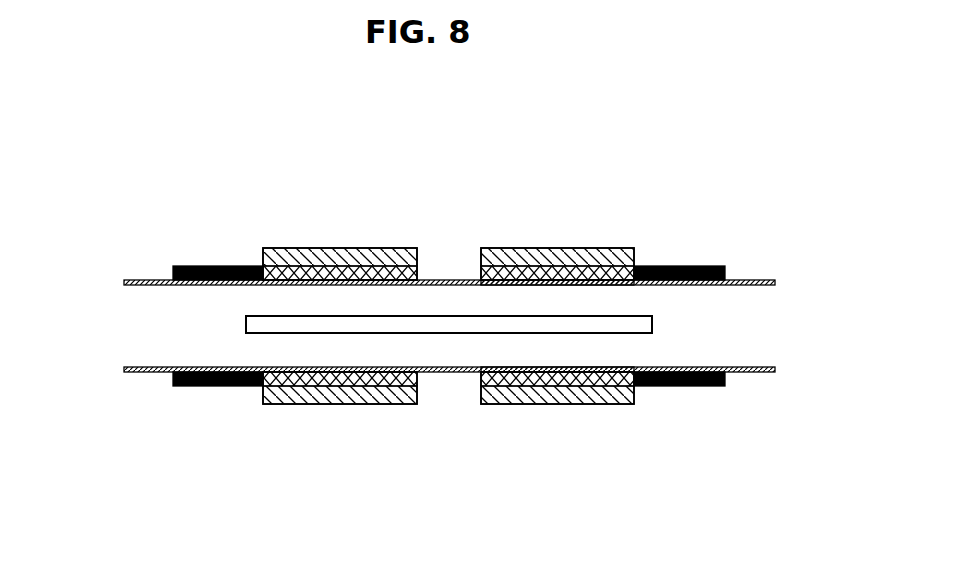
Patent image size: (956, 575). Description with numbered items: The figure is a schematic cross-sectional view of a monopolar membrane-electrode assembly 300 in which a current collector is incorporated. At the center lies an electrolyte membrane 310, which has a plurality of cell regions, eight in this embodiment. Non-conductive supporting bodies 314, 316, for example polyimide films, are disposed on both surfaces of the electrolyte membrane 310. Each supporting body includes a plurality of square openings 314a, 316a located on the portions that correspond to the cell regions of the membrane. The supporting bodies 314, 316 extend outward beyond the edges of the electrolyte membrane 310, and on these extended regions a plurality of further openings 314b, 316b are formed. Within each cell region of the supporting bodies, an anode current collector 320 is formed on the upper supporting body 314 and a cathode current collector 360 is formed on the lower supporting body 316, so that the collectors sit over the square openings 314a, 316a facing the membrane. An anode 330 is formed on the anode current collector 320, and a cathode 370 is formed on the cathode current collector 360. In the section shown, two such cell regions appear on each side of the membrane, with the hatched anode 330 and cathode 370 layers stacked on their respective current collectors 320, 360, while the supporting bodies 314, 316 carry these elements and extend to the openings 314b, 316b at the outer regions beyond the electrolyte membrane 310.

The monopolar membrane-electrode assembly 300 is at (172, 134).
The electrolyte membrane 310 is at (652, 330).
The non-conductive supporting body 314 is at (124, 283).
The square opening 314a is at (600, 282).
The opening 314b is at (202, 285).
The non-conductive supporting body 316 is at (124, 369).
The square opening 316a is at (598, 386).
The opening 316b is at (202, 367).
The anode current collector 320 is at (548, 276).
The anode 330 is at (298, 247).
The cathode current collector 360 is at (540, 390).
The cathode 370 is at (353, 396).